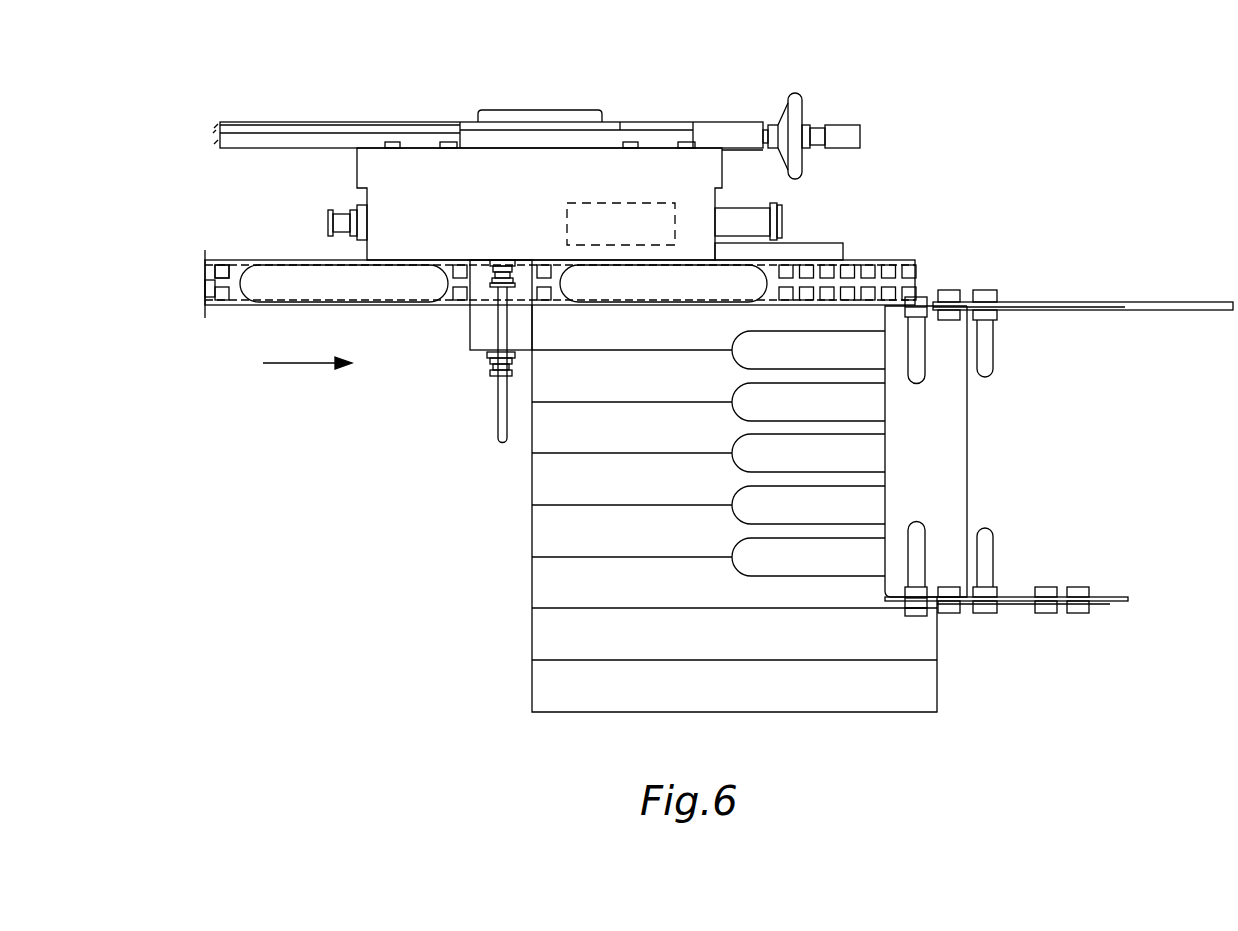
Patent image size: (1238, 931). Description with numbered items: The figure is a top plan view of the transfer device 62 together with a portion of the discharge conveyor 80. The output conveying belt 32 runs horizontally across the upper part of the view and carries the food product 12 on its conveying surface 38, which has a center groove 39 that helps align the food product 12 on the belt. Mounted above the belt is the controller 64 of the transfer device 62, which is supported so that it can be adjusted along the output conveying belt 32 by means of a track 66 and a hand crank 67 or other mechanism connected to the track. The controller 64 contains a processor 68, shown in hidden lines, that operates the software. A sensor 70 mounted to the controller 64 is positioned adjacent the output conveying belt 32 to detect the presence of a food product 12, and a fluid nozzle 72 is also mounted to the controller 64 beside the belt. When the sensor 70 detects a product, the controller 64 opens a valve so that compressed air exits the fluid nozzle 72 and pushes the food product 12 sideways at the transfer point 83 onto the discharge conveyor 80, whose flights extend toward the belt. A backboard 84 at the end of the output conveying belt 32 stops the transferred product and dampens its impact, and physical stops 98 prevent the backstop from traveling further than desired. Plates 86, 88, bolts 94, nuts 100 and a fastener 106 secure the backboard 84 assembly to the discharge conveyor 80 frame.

The food product 12 is at (361, 300).
The output conveying belt 32 is at (225, 305).
The conveying surface 38 is at (227, 272).
The groove 39 is at (213, 279).
The transfer device 62 is at (650, 62).
The controller 64 is at (712, 203).
The track 66 is at (327, 122).
The hand crank 67 is at (803, 110).
The processor 68 is at (567, 213).
The sensor 70 is at (495, 290).
The fluid nozzle 72 is at (783, 218).
The discharge conveyor 80 is at (487, 628).
The transfer point 83 is at (798, 323).
The backboard 84 is at (890, 440).
The lower plate 86 is at (1125, 597).
The upper plate 88 is at (1150, 300).
The bolts 94 is at (993, 356).
The physical stops 98 is at (1096, 312).
The nuts 100 is at (952, 290).
The fastener 106 is at (918, 610).